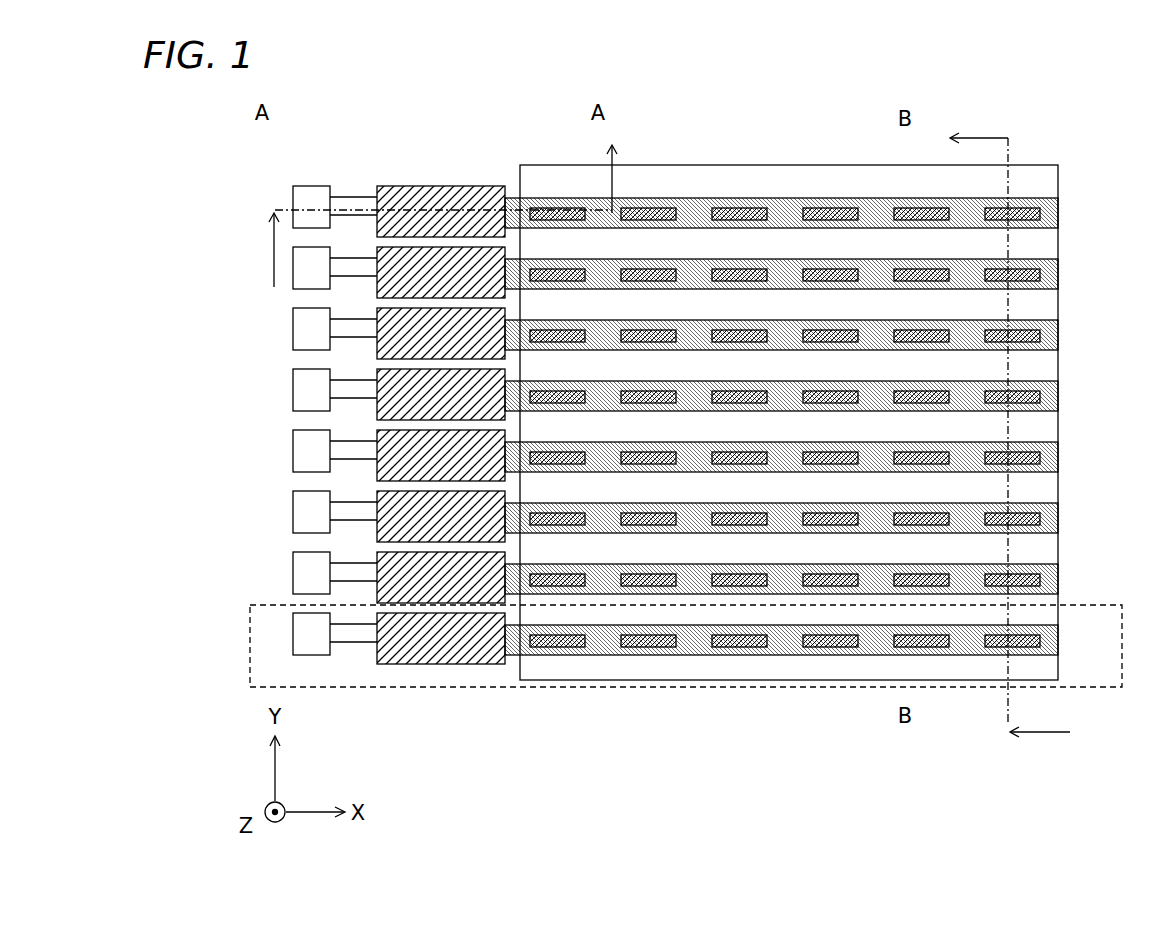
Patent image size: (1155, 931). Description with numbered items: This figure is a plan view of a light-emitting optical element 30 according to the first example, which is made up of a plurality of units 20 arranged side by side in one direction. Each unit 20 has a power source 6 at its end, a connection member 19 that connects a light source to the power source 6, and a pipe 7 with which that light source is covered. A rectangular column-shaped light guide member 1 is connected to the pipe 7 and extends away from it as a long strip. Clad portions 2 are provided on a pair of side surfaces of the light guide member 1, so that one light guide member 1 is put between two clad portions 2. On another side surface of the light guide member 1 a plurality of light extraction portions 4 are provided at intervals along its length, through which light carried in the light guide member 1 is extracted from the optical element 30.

The light guide member 1 is at (785, 213).
The clad portion 2 is at (840, 185).
The light extraction portion 4 is at (718, 213).
The power source 6 is at (313, 198).
The pipe 7 is at (455, 205).
The connection member 19 is at (358, 208).
The unit 20 is at (493, 690).
The optical element 30 is at (1090, 736).